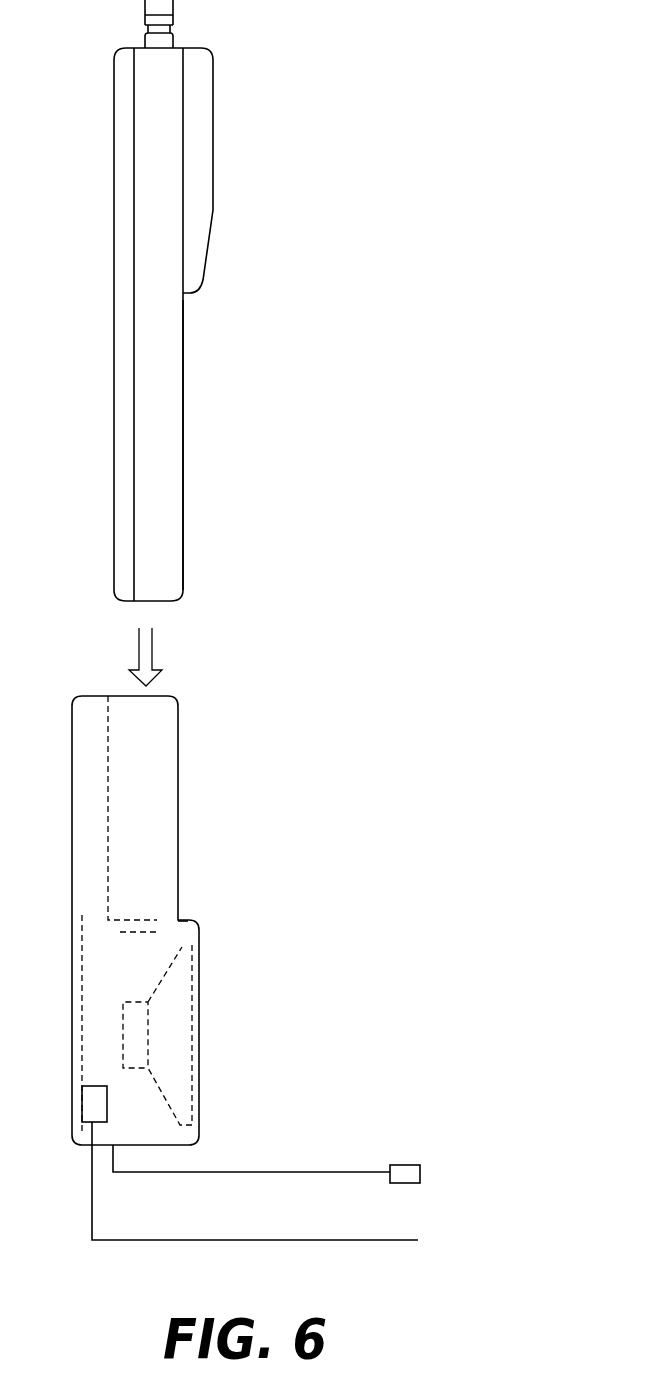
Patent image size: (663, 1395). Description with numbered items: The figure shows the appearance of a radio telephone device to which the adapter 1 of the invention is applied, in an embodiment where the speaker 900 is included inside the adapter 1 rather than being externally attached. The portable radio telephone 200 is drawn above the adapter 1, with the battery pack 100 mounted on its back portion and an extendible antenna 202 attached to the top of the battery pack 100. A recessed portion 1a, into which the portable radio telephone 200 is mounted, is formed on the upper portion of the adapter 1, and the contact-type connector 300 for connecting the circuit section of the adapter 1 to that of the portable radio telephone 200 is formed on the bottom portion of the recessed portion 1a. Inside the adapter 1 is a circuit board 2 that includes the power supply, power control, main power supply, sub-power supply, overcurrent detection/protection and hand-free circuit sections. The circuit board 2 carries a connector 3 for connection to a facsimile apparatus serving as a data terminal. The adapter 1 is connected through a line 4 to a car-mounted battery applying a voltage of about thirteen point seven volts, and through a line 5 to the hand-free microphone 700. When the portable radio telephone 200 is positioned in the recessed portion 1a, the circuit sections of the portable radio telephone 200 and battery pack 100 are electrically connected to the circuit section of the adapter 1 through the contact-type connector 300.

The battery pack 100 is at (114, 290).
The portable radio telephone 200 is at (183, 372).
The extendible antenna 202 is at (178, 12).
The adapter 1 is at (178, 752).
The recessed portion 1a is at (178, 833).
The circuit board 2 is at (72, 980).
The contact-type connector 300 is at (137, 923).
The speaker 900 is at (178, 1060).
The connector 3 is at (92, 1103).
The line 4 is at (240, 1240).
The line 5 is at (258, 1173).
The hand-free microphone 700 is at (403, 1165).